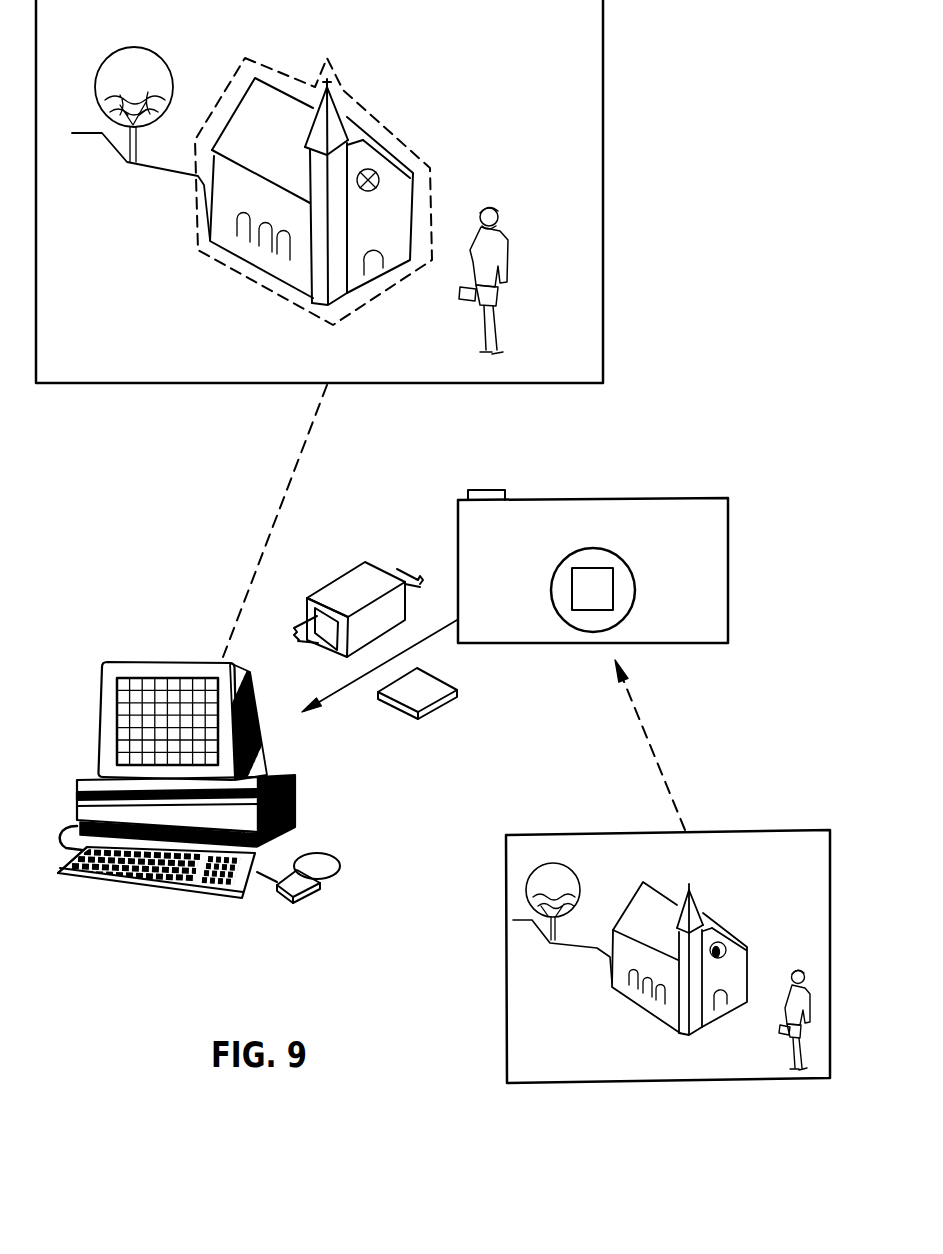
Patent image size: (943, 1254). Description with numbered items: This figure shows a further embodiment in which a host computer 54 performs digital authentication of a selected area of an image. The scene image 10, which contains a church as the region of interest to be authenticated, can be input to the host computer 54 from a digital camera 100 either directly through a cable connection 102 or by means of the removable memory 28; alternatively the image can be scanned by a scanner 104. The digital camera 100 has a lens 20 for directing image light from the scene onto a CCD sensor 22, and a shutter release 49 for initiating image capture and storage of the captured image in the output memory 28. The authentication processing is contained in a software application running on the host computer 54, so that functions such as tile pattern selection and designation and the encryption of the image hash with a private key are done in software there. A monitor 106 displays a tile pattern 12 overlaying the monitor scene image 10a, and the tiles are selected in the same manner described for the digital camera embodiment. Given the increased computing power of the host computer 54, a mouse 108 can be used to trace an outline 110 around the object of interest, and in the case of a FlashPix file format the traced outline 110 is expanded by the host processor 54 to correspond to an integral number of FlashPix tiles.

The scene image 10 is at (505, 980).
The monitor scene image 10a is at (604, 192).
The tile pattern 12 is at (157, 695).
The lens 20 is at (636, 587).
The CCD sensor 22 is at (569, 577).
The removable output memory 28 is at (441, 707).
The shutter release 49 is at (488, 489).
The host computer 54 is at (297, 793).
The digital camera 100 is at (728, 570).
The cable connection 102 is at (341, 686).
The scanner 104 is at (336, 582).
The monitor 106 is at (267, 734).
The mouse 108 is at (318, 898).
The outline 110 is at (345, 88).